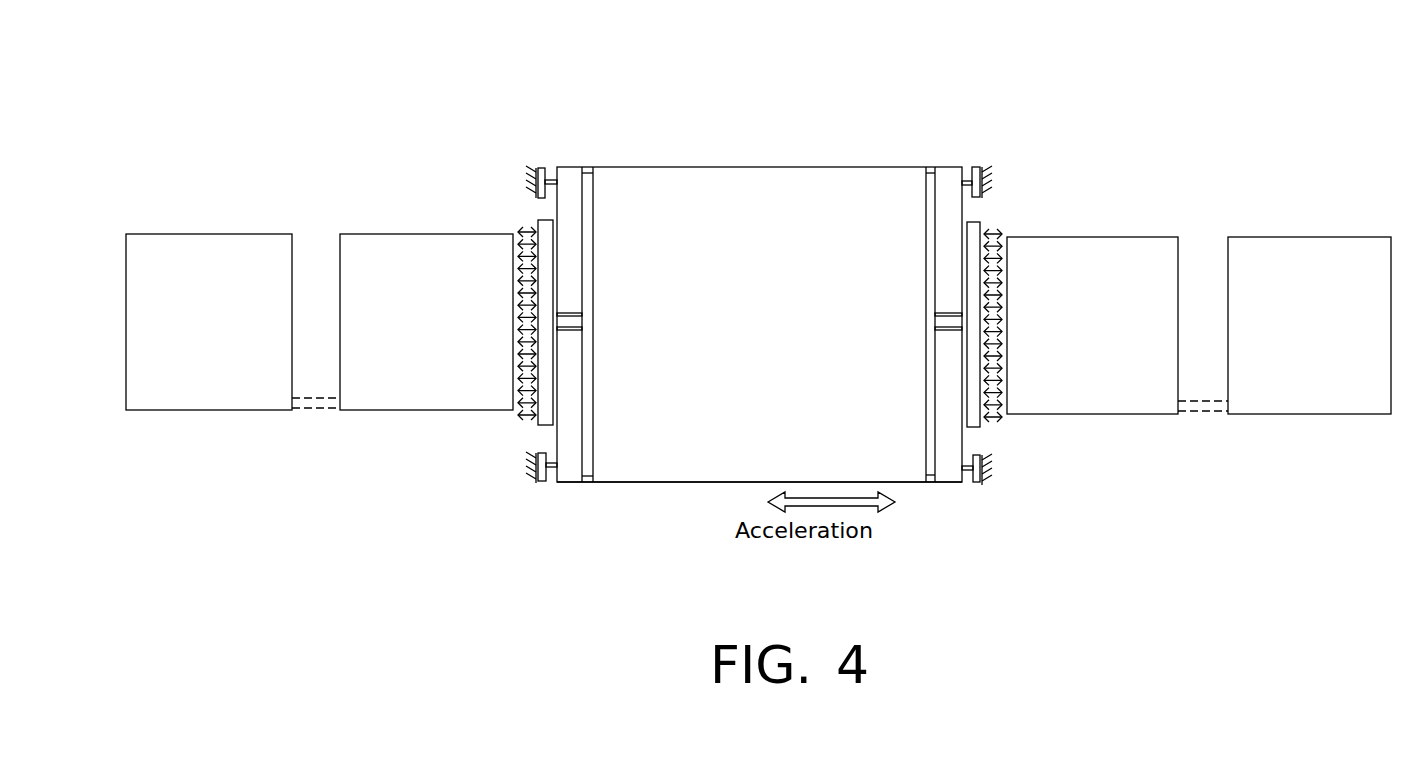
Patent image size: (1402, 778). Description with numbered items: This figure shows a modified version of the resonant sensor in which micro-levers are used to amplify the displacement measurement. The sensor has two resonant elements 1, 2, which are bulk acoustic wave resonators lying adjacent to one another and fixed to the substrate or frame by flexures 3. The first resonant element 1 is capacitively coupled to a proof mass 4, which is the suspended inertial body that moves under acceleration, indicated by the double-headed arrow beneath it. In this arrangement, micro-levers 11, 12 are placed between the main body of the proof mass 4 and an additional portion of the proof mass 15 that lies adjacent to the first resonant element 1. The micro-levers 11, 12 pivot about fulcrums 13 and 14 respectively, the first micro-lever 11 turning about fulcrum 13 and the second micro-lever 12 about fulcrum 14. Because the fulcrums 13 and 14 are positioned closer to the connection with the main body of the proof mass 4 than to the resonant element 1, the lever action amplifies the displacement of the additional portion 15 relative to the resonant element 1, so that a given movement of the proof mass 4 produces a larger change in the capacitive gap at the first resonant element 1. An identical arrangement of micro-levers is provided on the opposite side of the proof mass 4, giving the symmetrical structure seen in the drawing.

The first resonant element 1 is at (422, 411).
The second resonant element 2 is at (198, 411).
The flexures 3 is at (1083, 414).
The proof mass 4 is at (780, 167).
The micro-lever 11 is at (573, 167).
The micro-lever 12 is at (574, 483).
The fulcrum 13 is at (537, 180).
The fulcrum 14 is at (536, 483).
The additional portion of the proof mass 15 is at (540, 427).